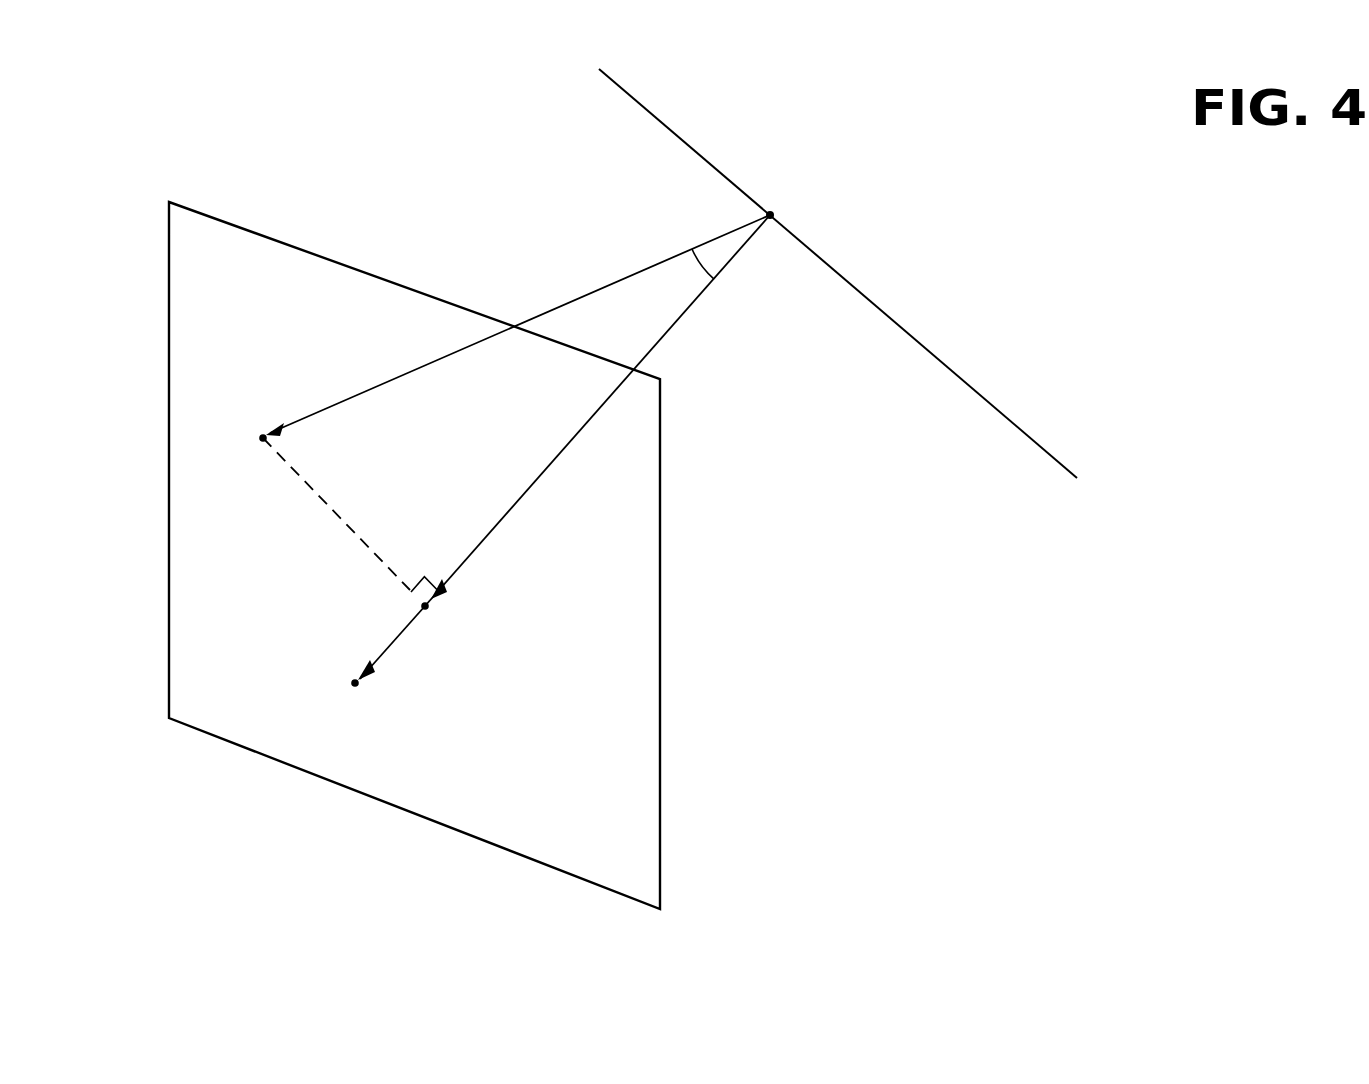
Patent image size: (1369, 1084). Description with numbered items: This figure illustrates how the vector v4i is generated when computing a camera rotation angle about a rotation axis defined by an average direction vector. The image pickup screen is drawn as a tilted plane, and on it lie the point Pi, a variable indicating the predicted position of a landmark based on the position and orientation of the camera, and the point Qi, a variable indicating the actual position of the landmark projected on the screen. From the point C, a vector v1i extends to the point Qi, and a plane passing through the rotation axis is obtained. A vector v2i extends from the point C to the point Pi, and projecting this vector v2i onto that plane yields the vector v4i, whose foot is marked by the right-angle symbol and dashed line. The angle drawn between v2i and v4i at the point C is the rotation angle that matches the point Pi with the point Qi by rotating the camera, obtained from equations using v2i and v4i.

The point C is at (777, 212).
The point Pi is at (255, 422).
The point Qi is at (341, 682).
The vector v1i is at (366, 680).
The vector v2i is at (270, 437).
The vector v4i is at (435, 598).